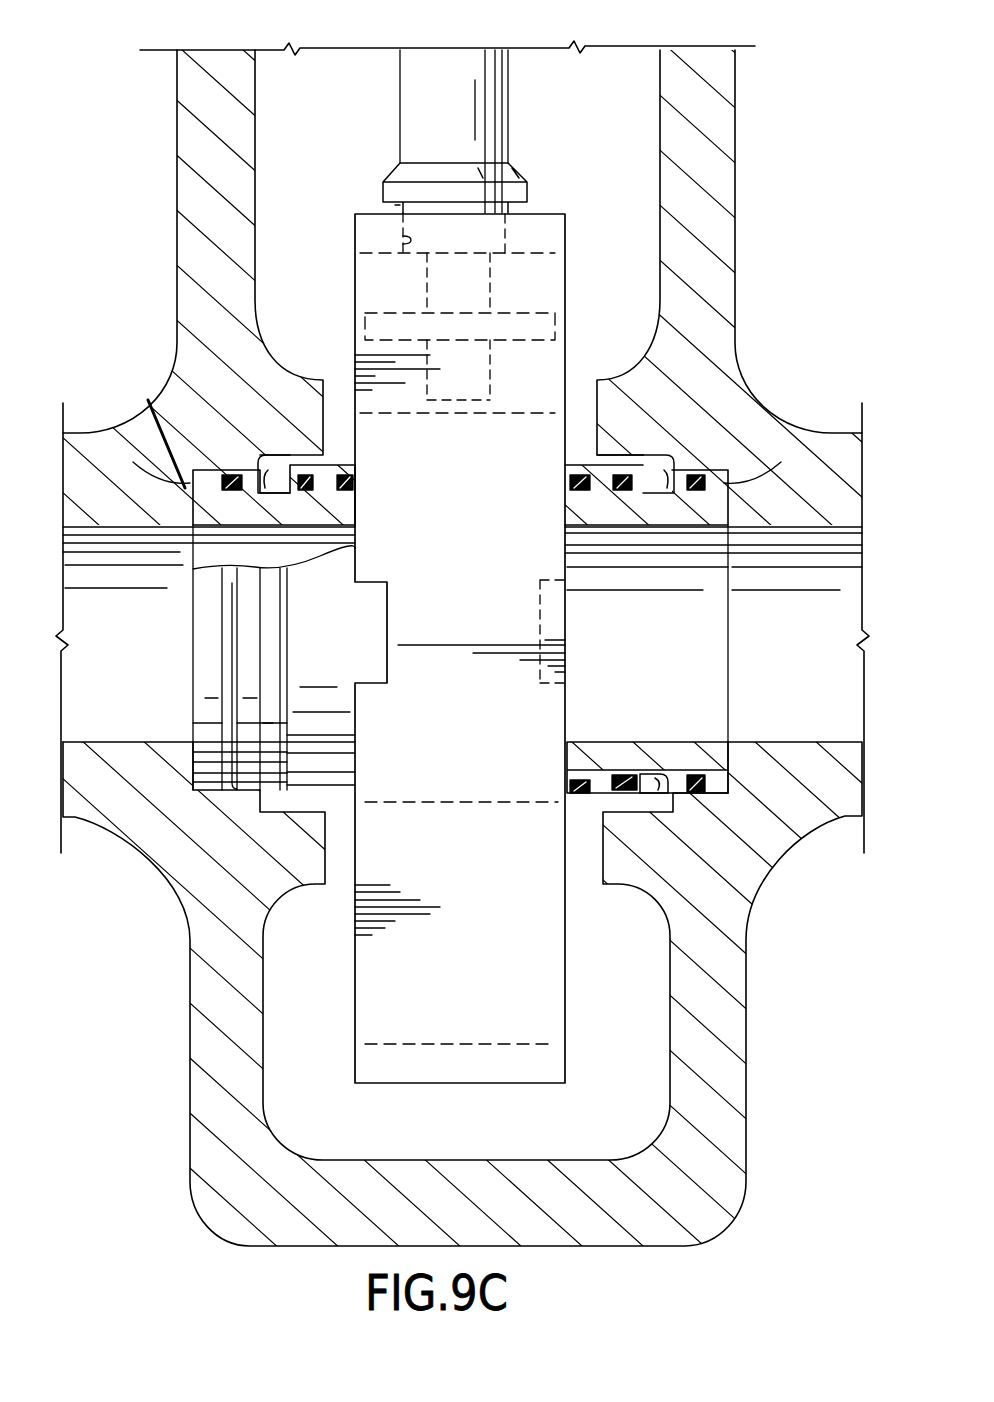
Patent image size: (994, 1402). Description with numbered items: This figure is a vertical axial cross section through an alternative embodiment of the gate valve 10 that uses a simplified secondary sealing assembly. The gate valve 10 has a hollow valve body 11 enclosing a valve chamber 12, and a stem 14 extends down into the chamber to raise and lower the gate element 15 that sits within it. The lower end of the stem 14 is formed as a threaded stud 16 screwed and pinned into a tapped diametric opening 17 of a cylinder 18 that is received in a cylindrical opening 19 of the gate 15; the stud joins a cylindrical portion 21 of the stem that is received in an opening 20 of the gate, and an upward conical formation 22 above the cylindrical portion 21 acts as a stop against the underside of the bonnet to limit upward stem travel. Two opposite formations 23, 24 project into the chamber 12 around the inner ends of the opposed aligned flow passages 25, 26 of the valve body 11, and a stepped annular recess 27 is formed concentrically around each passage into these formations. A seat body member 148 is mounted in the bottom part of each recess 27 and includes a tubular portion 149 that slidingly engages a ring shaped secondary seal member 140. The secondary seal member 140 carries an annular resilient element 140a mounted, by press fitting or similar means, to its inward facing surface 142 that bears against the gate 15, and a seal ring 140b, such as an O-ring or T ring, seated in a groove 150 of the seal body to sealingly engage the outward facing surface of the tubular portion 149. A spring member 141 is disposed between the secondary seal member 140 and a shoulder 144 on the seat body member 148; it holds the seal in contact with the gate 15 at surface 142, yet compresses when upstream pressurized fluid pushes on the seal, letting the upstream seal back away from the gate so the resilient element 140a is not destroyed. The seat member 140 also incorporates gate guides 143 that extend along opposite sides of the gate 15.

The gate valve 10 is at (736, 197).
The valve body 11 is at (738, 245).
The valve chamber 12 is at (660, 157).
The stem 14 is at (446, 68).
The gate element 15 is at (355, 238).
The threaded stud 16 is at (419, 309).
The tapped diametric opening 17 is at (484, 311).
The cylinder 18 is at (567, 352).
The cylindrical opening 19 is at (565, 262).
The opening 20 is at (402, 236).
The cylindrical portion 21 is at (398, 210).
The upward conical formation 22 is at (390, 172).
The formation 23 is at (355, 416).
The formation 24 is at (565, 388).
The flow passage 25 is at (92, 742).
The flow passage 26 is at (820, 742).
The stepped annular recess 27 is at (148, 400).
The secondary seal member 140 is at (572, 448).
The annular resilient element 140a is at (572, 490).
The seal ring 140b is at (622, 775).
The spring member 141 is at (275, 455).
The inward facing surface 142 is at (355, 483).
The gate guides 143 is at (527, 667).
The shoulder 144 is at (181, 350).
The seat body member 148 is at (100, 433).
The tubular portion 149 is at (567, 730).
The groove 150 is at (660, 776).